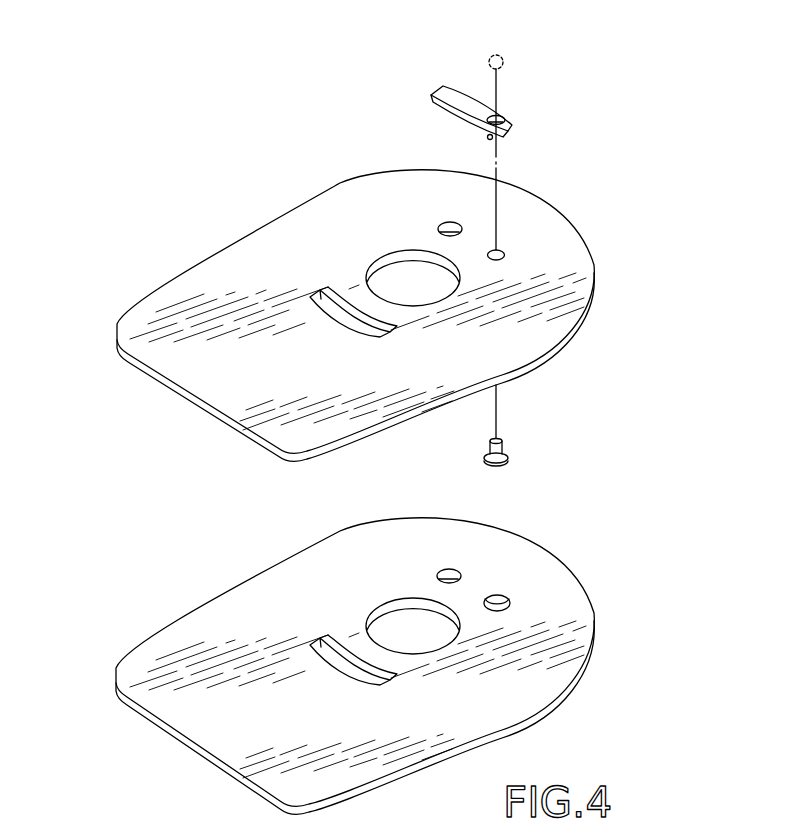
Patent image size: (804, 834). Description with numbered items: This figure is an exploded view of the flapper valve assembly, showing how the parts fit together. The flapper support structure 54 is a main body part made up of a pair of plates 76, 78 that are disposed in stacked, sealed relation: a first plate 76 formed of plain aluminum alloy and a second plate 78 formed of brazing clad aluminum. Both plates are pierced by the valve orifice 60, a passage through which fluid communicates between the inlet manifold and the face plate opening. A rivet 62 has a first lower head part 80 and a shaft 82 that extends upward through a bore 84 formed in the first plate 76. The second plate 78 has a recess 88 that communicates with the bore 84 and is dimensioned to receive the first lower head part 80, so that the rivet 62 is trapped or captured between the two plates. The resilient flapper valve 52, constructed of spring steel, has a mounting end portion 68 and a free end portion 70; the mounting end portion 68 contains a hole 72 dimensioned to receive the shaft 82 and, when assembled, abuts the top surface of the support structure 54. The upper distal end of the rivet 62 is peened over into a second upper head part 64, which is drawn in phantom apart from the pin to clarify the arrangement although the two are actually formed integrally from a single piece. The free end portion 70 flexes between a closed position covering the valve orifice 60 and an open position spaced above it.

The flapper valve 52 is at (480, 107).
The flapper support structure 54 is at (413, 415).
The valve orifice 60 is at (440, 565).
The rivet 62 is at (504, 467).
The second upper head part 64 is at (505, 56).
The mounting end portion 68 is at (520, 109).
The free end portion 70 is at (508, 86).
The hole 72 is at (498, 114).
The first plate 76 is at (406, 316).
The second plate 78 is at (402, 666).
The first lower head part 80 is at (546, 476).
The shaft 82 is at (478, 452).
The bore 84 is at (505, 243).
The recess 88 is at (508, 590).